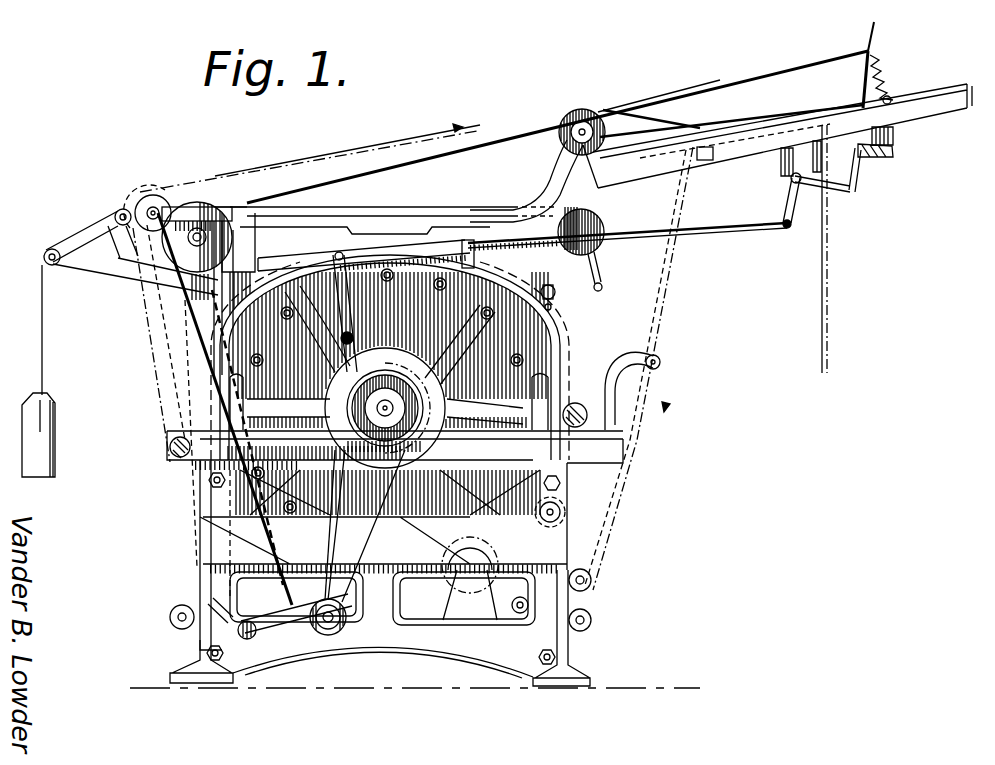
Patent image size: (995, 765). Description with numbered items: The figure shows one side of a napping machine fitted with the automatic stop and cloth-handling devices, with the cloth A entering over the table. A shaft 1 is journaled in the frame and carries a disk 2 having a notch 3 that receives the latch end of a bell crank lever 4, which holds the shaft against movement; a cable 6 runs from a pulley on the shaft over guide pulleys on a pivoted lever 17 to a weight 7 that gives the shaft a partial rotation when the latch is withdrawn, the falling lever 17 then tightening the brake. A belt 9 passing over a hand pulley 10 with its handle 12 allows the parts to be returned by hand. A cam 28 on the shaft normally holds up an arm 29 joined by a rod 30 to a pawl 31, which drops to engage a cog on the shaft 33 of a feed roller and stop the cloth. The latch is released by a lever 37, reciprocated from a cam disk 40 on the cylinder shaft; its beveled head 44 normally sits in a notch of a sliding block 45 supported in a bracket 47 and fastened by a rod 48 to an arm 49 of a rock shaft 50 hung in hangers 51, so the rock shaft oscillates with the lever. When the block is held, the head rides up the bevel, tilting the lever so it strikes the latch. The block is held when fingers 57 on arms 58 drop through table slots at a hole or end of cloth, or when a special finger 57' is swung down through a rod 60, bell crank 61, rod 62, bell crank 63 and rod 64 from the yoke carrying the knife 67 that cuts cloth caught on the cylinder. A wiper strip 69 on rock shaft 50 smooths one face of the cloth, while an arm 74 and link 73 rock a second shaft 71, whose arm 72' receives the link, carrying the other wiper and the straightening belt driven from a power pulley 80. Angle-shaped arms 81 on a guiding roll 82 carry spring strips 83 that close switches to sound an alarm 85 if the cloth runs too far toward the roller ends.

The shaft 1 is at (220, 228).
The disk 2 is at (197, 237).
The notch 3 is at (190, 207).
The bell crank lever 4 is at (223, 207).
The cable 6 is at (40, 342).
The weight 7 is at (28, 437).
The belt 9 is at (487, 210).
The pulley 10 is at (602, 255).
The handle 12 is at (602, 283).
The lever 17 is at (108, 272).
The cam 28 is at (176, 260).
The arm 29 is at (182, 187).
The rod 30 is at (201, 352).
The pawl 31 is at (276, 632).
The shaft 33 is at (338, 642).
The lever 37 is at (350, 254).
The disk 40 is at (385, 408).
The head 44 is at (466, 238).
The sliding block 45 is at (432, 210).
The bracket 47 is at (494, 246).
The rod 48 is at (665, 236).
The arm 49 is at (785, 212).
The rock shaft 50 is at (792, 180).
The hangers 51 is at (781, 165).
The fingers 57 is at (842, 79).
The finger 57' is at (857, 35).
The arms 58 is at (885, 87).
The rod 60 is at (716, 86).
The bell crank 61 is at (266, 240).
The rod 62 is at (196, 513).
The bell crank 63 is at (197, 647).
The rod 64 is at (233, 615).
The knife 67 is at (333, 540).
The wiper strip 69 is at (789, 227).
The rock shaft 71 is at (893, 160).
The link 72' is at (882, 170).
The link 73 is at (863, 175).
The arm 74 is at (832, 188).
The power pulley 80 is at (581, 112).
The angle-shaped arms 81 is at (560, 530).
The guiding roll 82 is at (560, 518).
The spring strip 83 is at (470, 532).
The alarm 85 is at (558, 297).
The cloth A is at (150, 375).